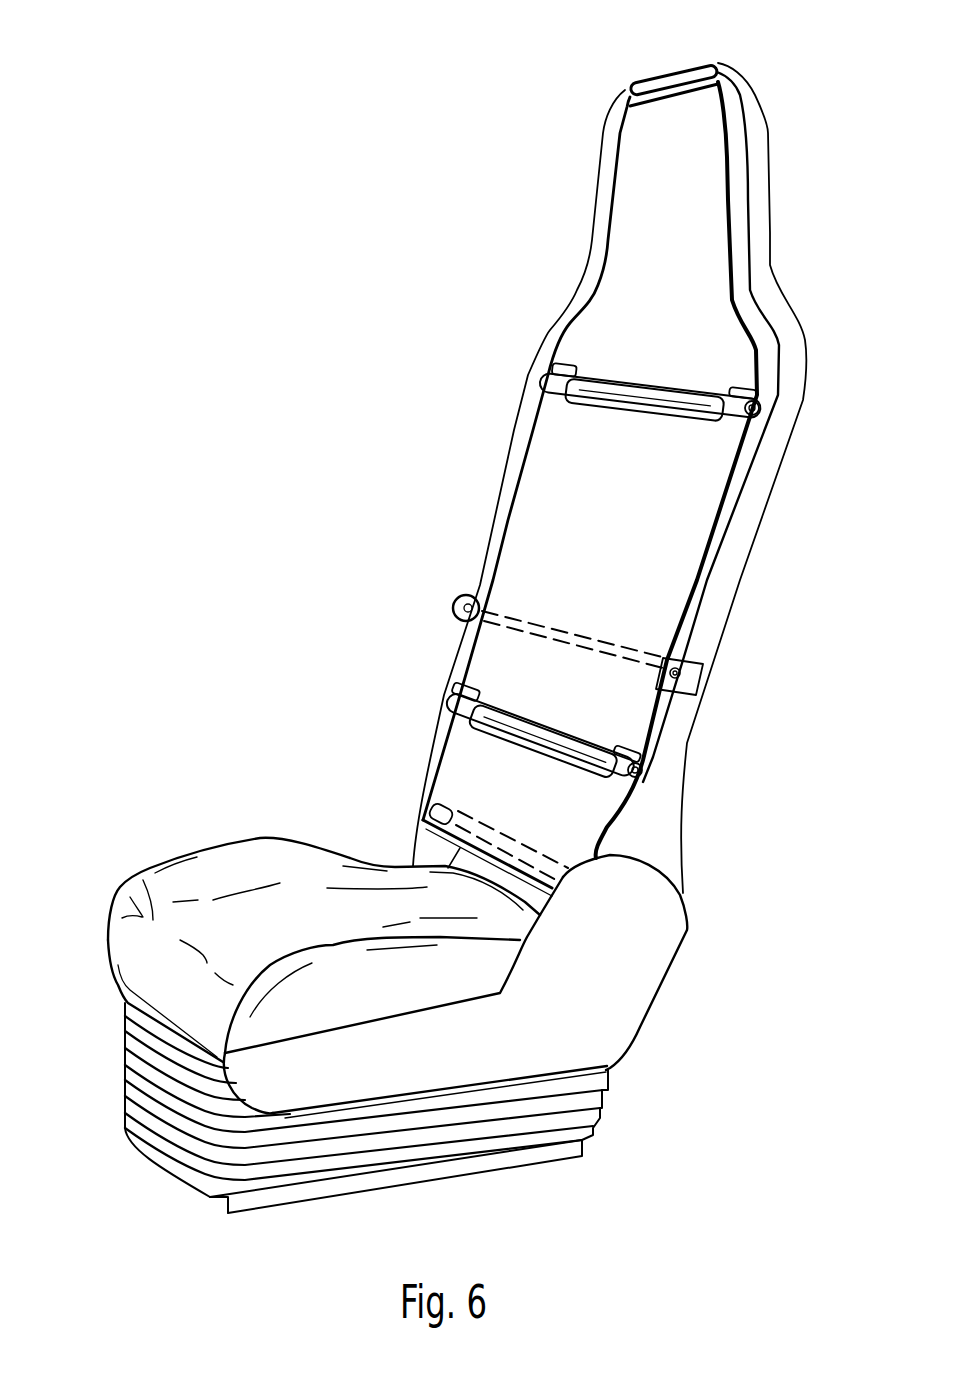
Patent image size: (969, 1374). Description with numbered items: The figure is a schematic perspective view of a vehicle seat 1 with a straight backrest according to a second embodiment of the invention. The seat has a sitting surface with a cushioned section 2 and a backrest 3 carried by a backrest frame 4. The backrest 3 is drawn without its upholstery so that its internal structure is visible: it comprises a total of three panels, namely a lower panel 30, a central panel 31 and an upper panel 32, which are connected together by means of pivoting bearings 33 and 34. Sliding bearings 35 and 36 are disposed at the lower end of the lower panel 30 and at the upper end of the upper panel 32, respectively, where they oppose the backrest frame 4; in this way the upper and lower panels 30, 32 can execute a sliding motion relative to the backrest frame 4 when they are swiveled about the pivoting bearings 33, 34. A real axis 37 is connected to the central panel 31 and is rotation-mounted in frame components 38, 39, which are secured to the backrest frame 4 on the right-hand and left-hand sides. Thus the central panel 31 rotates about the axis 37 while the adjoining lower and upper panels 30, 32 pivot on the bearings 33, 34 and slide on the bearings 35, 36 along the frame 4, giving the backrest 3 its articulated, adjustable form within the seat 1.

The vehicle seat 1 is at (240, 812).
The cushioned section 2 is at (297, 867).
The backrest 3 is at (435, 505).
The backrest frame 4 is at (753, 513).
The lower panel 30 is at (597, 807).
The central panel 31 is at (665, 613).
The upper panel 32 is at (703, 315).
The pivoting bearing 33 is at (648, 768).
The pivoting bearing 34 is at (683, 398).
The sliding bearing 35 is at (434, 806).
The sliding bearing 36 is at (664, 84).
The real axis 37 is at (503, 622).
The frame component 38 is at (456, 606).
The frame component 39 is at (692, 673).